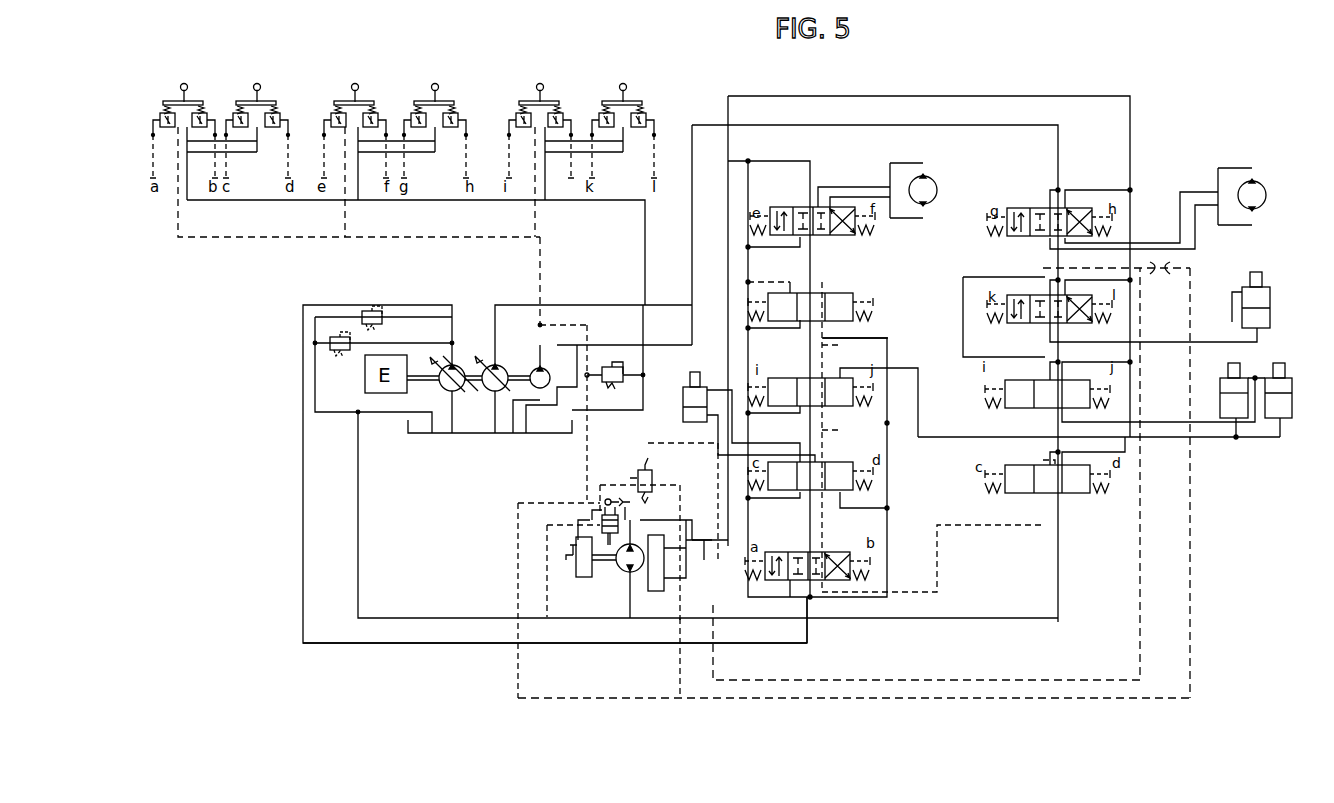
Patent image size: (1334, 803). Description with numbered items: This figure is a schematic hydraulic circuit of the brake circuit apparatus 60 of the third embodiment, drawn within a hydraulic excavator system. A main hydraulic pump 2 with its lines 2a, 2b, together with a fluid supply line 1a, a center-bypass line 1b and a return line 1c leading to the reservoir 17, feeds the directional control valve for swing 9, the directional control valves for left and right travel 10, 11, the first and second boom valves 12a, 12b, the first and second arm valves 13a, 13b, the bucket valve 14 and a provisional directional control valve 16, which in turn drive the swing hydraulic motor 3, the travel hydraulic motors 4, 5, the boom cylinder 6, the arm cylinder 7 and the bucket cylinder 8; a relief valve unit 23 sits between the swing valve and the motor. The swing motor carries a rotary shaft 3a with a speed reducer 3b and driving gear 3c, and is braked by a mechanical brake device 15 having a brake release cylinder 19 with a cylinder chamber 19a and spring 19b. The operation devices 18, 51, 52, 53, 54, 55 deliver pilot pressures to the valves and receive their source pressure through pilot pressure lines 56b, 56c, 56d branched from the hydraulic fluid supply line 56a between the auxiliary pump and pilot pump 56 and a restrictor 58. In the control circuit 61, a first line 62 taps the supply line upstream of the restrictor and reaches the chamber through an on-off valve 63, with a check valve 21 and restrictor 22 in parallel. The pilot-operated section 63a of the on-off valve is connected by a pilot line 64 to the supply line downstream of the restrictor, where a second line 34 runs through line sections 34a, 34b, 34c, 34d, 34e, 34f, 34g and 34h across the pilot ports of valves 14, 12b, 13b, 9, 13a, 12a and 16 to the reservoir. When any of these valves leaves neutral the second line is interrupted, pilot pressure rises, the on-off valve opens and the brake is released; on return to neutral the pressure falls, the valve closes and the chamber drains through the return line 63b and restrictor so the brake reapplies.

The operation device 18 is at (184, 82).
The operation device for arm 51 is at (258, 82).
The operation device for left travel 52 is at (355, 82).
The operation device for right travel 53 is at (435, 82).
The operation device for boom 54 is at (532, 82).
The operation device for bucket 55 is at (623, 82).
The auxiliary pump and pilot pump 56 is at (540, 368).
The hydraulic fluid supply line 56a is at (874, 699).
The pilot pressure line 56b is at (178, 237).
The pilot pressure line 56c is at (345, 237).
The pilot pressure line 56d is at (535, 237).
The main hydraulic pump 2 is at (470, 365).
The main pump delivery line 2a is at (590, 305).
The main pump delivery line 2b is at (1058, 148).
The reservoir 17 is at (457, 433).
The fluid supply line 1a is at (300, 465).
The center-bypass line 1b is at (808, 252).
The return line 1c is at (755, 352).
The swing hydraulic motor 3 is at (629, 575).
The rotary shaft 3a is at (612, 572).
The speed reducer 3b is at (583, 577).
The driving gear 3c is at (569, 570).
The arm cylinder 7 is at (683, 393).
The brake release cylinder 19 is at (620, 516).
The cylinder chamber 19a is at (590, 525).
The spring 19b is at (608, 505).
The check valve 21 is at (606, 499).
The restrictor 22 is at (622, 485).
The relief valve unit 23 is at (664, 582).
The mechanical brake device 15 is at (678, 528).
The on-off valve 63 is at (652, 472).
The pilot-operated section 63a is at (660, 454).
The return line 63b is at (547, 550).
The brake circuit apparatus 60 is at (690, 708).
The control circuit 61 is at (841, 642).
The first line 62 is at (678, 682).
The pilot line 64 is at (960, 667).
The directional control valve for left travel 10 is at (778, 207).
The hydraulic motor for left travel 4 is at (938, 185).
The directional control valve for right travel 11 is at (1025, 208).
The hydraulic motor for right travel 5 is at (1266, 190).
The provisional directional control valve 16 is at (852, 293).
The first directional control valve for boom 12a is at (835, 408).
The second directional control valve for boom 12b is at (1010, 405).
The first directional control valve for arm 13a is at (838, 502).
The second directional control valve for arm 13b is at (1072, 495).
The directional control valve for bucket 14 is at (1110, 317).
The directional control valve for swing 9 is at (836, 552).
The bucket cylinder 8 is at (1270, 315).
The boom cylinder 6 is at (1292, 404).
The restrictor 58 is at (1160, 274).
The second line 34 is at (962, 528).
The line section 34a is at (1043, 268).
The line section 34b is at (1043, 357).
The line section 34c is at (1043, 457).
The line section 34d is at (1020, 527).
The line section 34e is at (822, 520).
The line section 34f is at (825, 431).
The line section 34g is at (825, 346).
The line section 34h is at (751, 282).